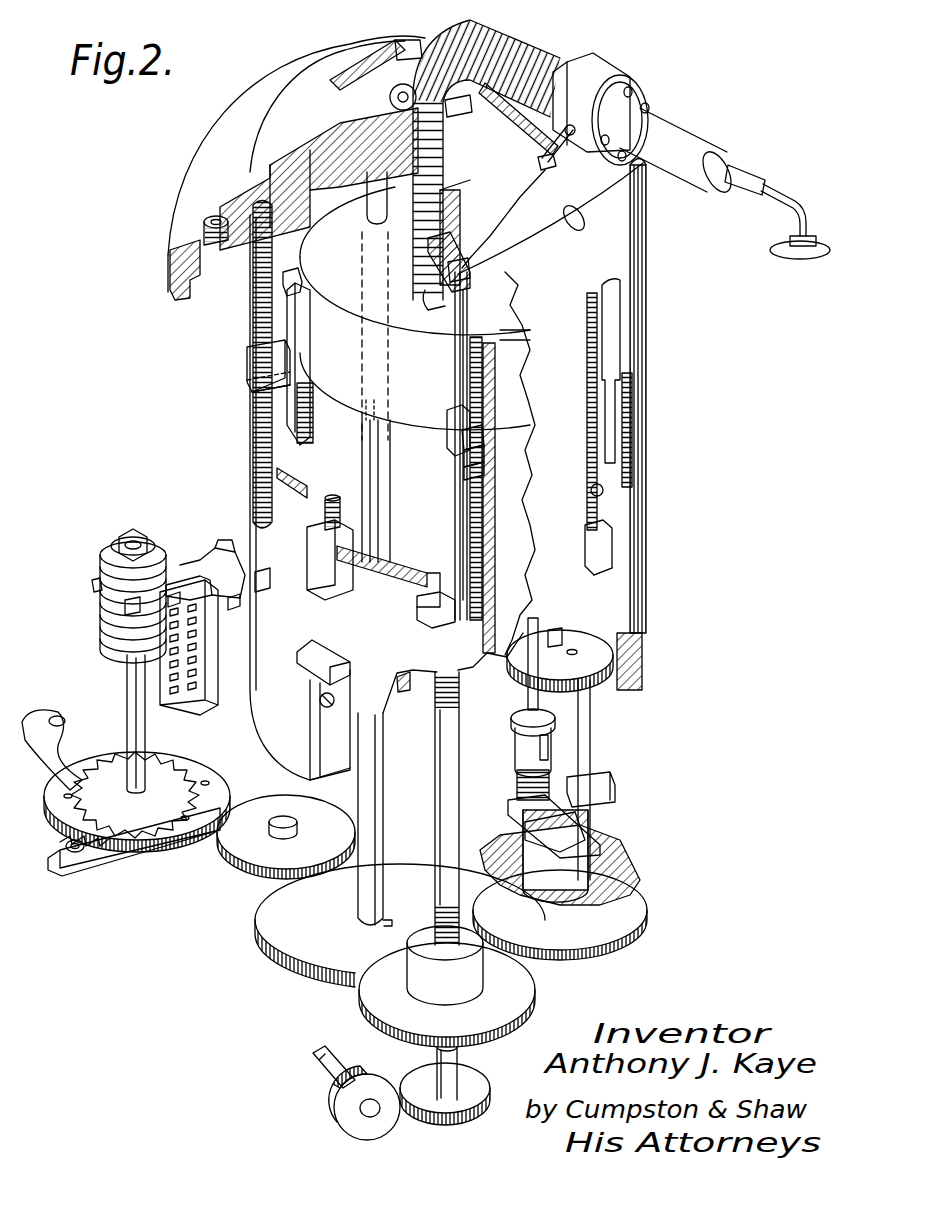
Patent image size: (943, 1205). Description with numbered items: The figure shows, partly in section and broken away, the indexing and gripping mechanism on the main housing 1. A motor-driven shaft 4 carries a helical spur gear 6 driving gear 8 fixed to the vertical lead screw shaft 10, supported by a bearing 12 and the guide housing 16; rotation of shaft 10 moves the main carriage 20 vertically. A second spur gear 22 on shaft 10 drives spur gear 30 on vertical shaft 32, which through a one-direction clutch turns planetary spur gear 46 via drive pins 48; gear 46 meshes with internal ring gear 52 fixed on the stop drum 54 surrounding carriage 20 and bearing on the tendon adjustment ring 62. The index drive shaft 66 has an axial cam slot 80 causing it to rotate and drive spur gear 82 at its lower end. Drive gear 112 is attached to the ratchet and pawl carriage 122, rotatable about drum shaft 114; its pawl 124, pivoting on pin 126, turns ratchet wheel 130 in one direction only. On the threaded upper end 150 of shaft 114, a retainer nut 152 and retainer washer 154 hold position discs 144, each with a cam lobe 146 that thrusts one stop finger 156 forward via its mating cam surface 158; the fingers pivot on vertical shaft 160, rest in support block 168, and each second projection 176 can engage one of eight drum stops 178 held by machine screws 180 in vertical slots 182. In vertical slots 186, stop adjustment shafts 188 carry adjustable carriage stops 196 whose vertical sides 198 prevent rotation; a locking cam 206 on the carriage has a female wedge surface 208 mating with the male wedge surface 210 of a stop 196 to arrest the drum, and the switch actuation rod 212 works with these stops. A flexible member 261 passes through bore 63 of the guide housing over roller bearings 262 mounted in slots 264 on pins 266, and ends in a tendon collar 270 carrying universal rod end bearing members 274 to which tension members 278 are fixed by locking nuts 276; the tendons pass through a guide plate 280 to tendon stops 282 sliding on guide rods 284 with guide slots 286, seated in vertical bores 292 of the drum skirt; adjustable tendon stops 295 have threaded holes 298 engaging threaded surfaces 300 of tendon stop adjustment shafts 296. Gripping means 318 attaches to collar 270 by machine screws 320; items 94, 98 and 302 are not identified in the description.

The main housing 1 is at (170, 268).
The shaft 4 is at (318, 1070).
The helical spur gear 6 is at (375, 1080).
The second gear 8 is at (478, 1086).
The vertical lead screw shaft 10 is at (448, 291).
The bearing 12 is at (415, 976).
The guide housing 16 is at (345, 128).
The main carriage 20 is at (352, 256).
The second spur gear 22 is at (525, 991).
The spur gear 30 is at (635, 908).
The vertical shaft 32 is at (554, 630).
The planetary spur gear 46 is at (520, 660).
The drive pins 48 is at (578, 660).
The internal ring gear 52 is at (643, 661).
The stop drum 54 is at (640, 611).
The tendon adjustment ring 62 is at (208, 222).
The bore 63 is at (418, 134).
The index drive shaft 66 is at (368, 208).
The cam slot 80 is at (370, 482).
The spur gear 82 is at (262, 950).
The disc 94 is at (240, 868).
The pin 98 is at (269, 823).
The drive gear 112 is at (165, 845).
The drum shaft 114 is at (128, 690).
The ratchet and pawl carriage 122 is at (70, 872).
The pawl 124 is at (98, 838).
The pin 126 is at (70, 854).
The ratchet wheel 130 is at (104, 773).
The position discs 144 is at (100, 630).
The cam surface 146 is at (93, 586).
The upper end 150 is at (137, 535).
The retainer nut 152 is at (130, 538).
The retainer washer 154 is at (114, 545).
The stop finger 156 is at (205, 585).
The mating cam surface 158 is at (188, 568).
The vertical shaft 160 is at (220, 545).
The support block 168 is at (205, 700).
The second projection 176 is at (196, 596).
The drum stops 178 is at (272, 579).
The machine screws 180 is at (320, 696).
The vertical slots 182 is at (318, 720).
The vertical slots 186 is at (612, 321).
The stop adjustment shafts 188 is at (352, 478).
The adjustable carriage stop 196 is at (250, 358).
The vertical sides 198 is at (250, 371).
The locking cam 206 is at (307, 351).
The female wedge-shaped surface 208 is at (303, 276).
The male wedge-shaped surface 210 is at (247, 386).
The switch actuation rod 212 is at (526, 706).
The flexible member 261 is at (515, 50).
The roller bearings 262 is at (406, 42).
The slots 264 is at (338, 84).
The pins 266 is at (460, 110).
The tendon collar 270 is at (603, 63).
The universal rod end bearing members 274 is at (560, 160).
The locking nuts 276 is at (547, 172).
The flexible tension members 278 is at (507, 209).
The guide plate 280 is at (468, 268).
The tendon stop 282 is at (450, 424).
The tendon stop guide rod 284 is at (458, 377).
The vertical guide slot 286 is at (446, 290).
The vertical bore 292 is at (448, 624).
The adjustable tendon stop 295 is at (483, 447).
The tendon stop adjustment shaft 296 is at (480, 400).
The bored and threaded hole 298 is at (482, 430).
The threaded surface 300 is at (478, 491).
The block 302 is at (483, 464).
The gripping means 318 is at (703, 152).
The machine screws 320 is at (650, 106).